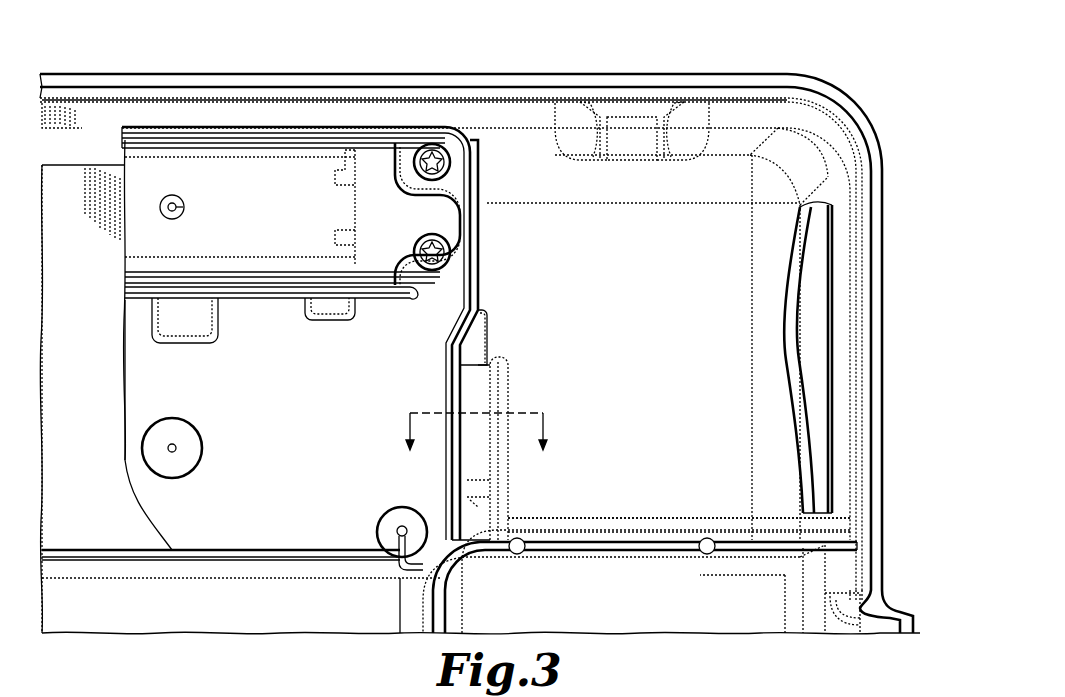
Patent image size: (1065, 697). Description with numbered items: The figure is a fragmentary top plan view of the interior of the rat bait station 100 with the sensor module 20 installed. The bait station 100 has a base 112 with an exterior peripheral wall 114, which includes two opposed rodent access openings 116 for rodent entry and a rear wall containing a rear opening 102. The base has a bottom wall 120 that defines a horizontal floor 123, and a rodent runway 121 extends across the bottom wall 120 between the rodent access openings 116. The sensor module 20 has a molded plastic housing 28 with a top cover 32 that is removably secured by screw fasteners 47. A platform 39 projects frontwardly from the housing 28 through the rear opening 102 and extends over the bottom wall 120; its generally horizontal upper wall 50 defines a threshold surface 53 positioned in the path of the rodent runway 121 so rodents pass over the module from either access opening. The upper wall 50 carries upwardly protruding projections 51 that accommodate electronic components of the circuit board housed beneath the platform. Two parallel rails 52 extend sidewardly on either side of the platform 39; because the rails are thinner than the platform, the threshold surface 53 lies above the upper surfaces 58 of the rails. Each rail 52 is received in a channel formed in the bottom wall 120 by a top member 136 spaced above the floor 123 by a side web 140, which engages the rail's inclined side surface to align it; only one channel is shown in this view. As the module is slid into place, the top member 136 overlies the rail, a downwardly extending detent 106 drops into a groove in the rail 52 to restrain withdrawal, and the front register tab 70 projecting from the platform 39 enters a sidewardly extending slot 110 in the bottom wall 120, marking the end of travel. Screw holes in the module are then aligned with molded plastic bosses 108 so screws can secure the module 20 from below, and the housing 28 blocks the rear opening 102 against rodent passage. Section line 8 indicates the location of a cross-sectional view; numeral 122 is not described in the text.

The rat bait station 100 is at (823, 66).
The sensor module 20 is at (205, 128).
The rear opening 102 is at (290, 145).
The exterior peripheral wall 114 is at (732, 103).
The base 112 is at (862, 265).
The molded plastic housing 28 is at (125, 200).
The horizontal floor 123 is at (72, 399).
The threshold surface 53 is at (239, 345).
The upwardly protruding projections 51 is at (190, 340).
The upper wall 50 is at (130, 425).
The platform 39 is at (125, 372).
The screw fasteners 47 is at (452, 252).
The top cover 32 is at (400, 290).
The rails 52 is at (490, 328).
The upper surfaces of the rails 58 is at (480, 345).
The side web 140 is at (519, 383).
The top member 136 is at (507, 470).
The detent 106 is at (490, 500).
The section line 8- 8 is at (473, 420).
The molded plastic boss 108 is at (402, 505).
The sidewardly extending slot 110 is at (97, 555).
The front register tab 70 is at (205, 560).
The lower frame member 122 is at (615, 552).
The rodent access openings 116 is at (796, 340).
The bottom wall 120 is at (679, 399).
The rodent runway 121 is at (679, 443).